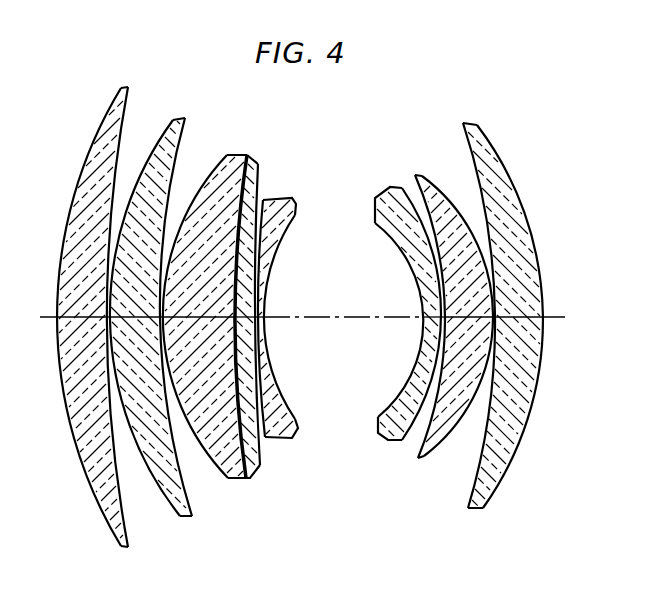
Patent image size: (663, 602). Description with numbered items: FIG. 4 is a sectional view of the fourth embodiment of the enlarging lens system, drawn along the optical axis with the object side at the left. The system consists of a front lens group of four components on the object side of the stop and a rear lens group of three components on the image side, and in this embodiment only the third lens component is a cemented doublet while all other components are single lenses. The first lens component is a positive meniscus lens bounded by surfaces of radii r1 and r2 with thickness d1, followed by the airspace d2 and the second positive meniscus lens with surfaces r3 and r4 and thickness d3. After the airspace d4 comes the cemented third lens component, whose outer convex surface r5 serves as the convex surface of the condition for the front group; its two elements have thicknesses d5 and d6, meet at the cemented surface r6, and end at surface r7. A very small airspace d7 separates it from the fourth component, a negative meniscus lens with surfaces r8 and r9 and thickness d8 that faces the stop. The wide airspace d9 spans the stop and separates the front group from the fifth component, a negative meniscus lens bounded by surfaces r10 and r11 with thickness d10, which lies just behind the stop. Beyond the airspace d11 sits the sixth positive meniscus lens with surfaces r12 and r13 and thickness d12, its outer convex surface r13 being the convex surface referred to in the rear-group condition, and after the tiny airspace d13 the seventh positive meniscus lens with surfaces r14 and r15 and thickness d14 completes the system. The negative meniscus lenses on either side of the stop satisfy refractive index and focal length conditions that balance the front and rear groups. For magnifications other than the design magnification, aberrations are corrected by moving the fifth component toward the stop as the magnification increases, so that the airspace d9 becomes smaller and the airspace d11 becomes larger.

The radius of curvature of first lens surface r1 is at (93, 497).
The radius of curvature of second lens surface r2 is at (130, 533).
The radius of curvature of third lens surface r3 is at (158, 488).
The radius of curvature of fourth lens surface r4 is at (192, 512).
The radius of curvature of fifth lens surface r5 is at (215, 470).
The radius of curvature of sixth lens surface r6 is at (239, 479).
The radius of curvature of seventh lens surface r7 is at (259, 450).
The radius of curvature of eighth lens surface r8 is at (264, 437).
The radius of curvature of ninth lens surface r9 is at (287, 400).
The radius of curvature of tenth lens surface r10 is at (397, 399).
The radius of curvature of eleventh lens surface r11 is at (404, 442).
The radius of curvature of twelfth lens surface r12 is at (417, 457).
The radius of curvature of thirteenth lens surface r13 is at (432, 448).
The radius of curvature of fourteenth lens surface r14 is at (472, 482).
The radius of curvature of fifteenth lens surface r15 is at (499, 480).
The thickness of first lens d1 is at (66, 316).
The airspace between first and second lenses d2 is at (78, 330).
The thickness of second lens d3 is at (125, 314).
The airspace between second and third lenses d4 is at (146, 322).
The thickness of front element of third lens d5 is at (175, 314).
The thickness of rear element of third lens d6 is at (204, 321).
The airspace between third and fourth lenses d7 is at (257, 306).
The thickness of fourth lens d8 is at (260, 333).
The airspace between front and rear lens groups d9 is at (333, 312).
The thickness of fifth lens d10 is at (426, 307).
The airspace between fifth and sixth lenses d11 is at (451, 325).
The thickness of sixth lens d12 is at (461, 313).
The airspace between sixth and seventh lenses d13 is at (509, 326).
The thickness of seventh lens d14 is at (511, 313).